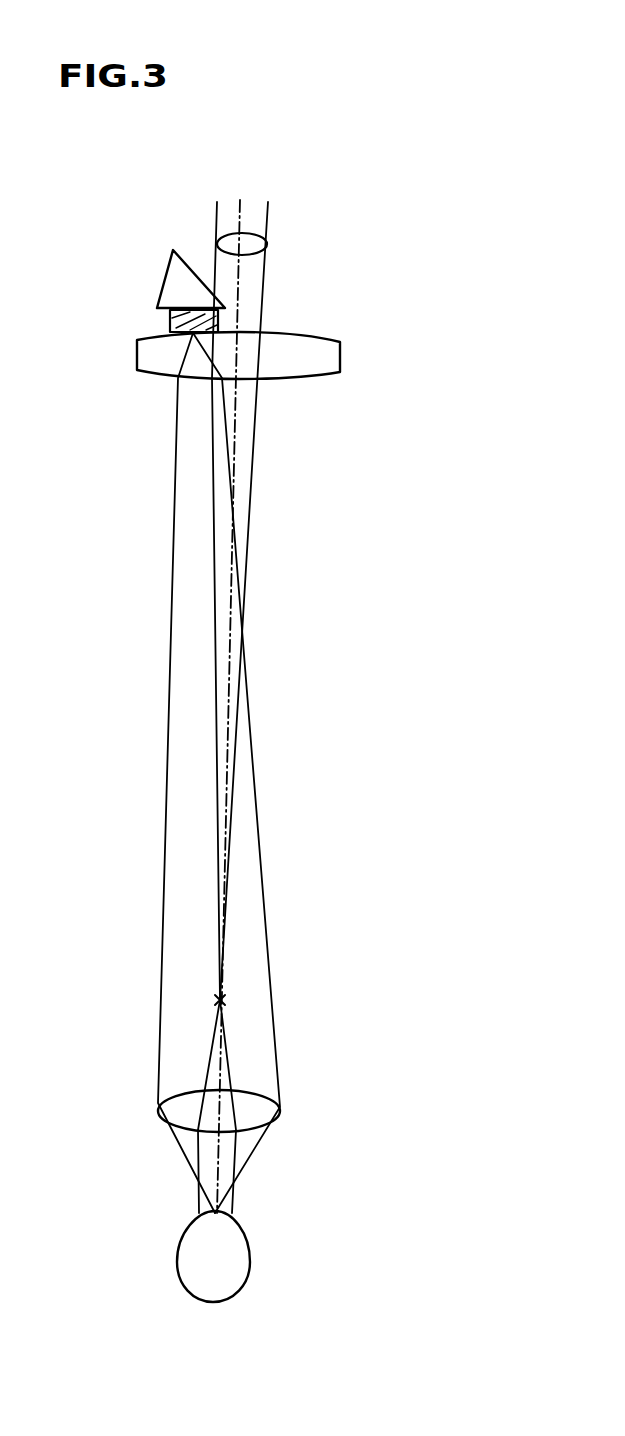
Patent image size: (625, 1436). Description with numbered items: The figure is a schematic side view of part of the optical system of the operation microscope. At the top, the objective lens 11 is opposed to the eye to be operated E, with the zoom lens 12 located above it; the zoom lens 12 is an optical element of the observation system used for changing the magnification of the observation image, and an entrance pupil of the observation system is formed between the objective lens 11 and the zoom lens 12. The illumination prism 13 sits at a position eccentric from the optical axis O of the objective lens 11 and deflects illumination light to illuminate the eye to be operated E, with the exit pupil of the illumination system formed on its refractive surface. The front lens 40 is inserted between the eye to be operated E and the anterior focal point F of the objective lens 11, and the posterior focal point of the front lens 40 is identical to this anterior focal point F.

The objective lens 11 is at (340, 357).
The zoom lens 12 is at (255, 228).
The illumination prism 13 is at (162, 280).
The front lens 40 is at (158, 1103).
The optical axis O is at (228, 625).
The anterior focal point F is at (224, 997).
The eye to be operated E is at (252, 1253).